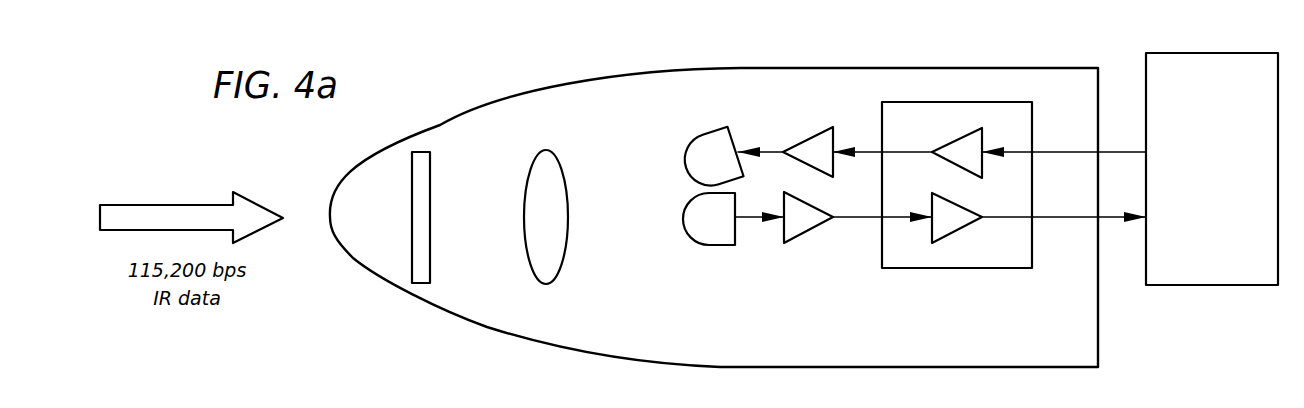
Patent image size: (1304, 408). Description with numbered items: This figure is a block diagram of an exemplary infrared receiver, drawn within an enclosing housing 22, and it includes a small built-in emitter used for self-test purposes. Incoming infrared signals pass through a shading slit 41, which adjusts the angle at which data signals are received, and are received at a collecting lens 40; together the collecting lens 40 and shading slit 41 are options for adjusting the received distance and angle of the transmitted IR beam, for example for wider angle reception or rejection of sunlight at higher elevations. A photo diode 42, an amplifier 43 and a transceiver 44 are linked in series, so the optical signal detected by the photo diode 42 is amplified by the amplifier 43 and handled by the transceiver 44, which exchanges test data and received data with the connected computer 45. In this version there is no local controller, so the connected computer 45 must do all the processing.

The remote control housing 22 is at (438, 99).
The collecting lens 40 is at (544, 262).
The shading slit 41 is at (420, 240).
The photo diode 42 is at (710, 245).
The amplifier 43 is at (813, 240).
The transceiver 44 is at (973, 268).
The connected computer 45 is at (1213, 285).